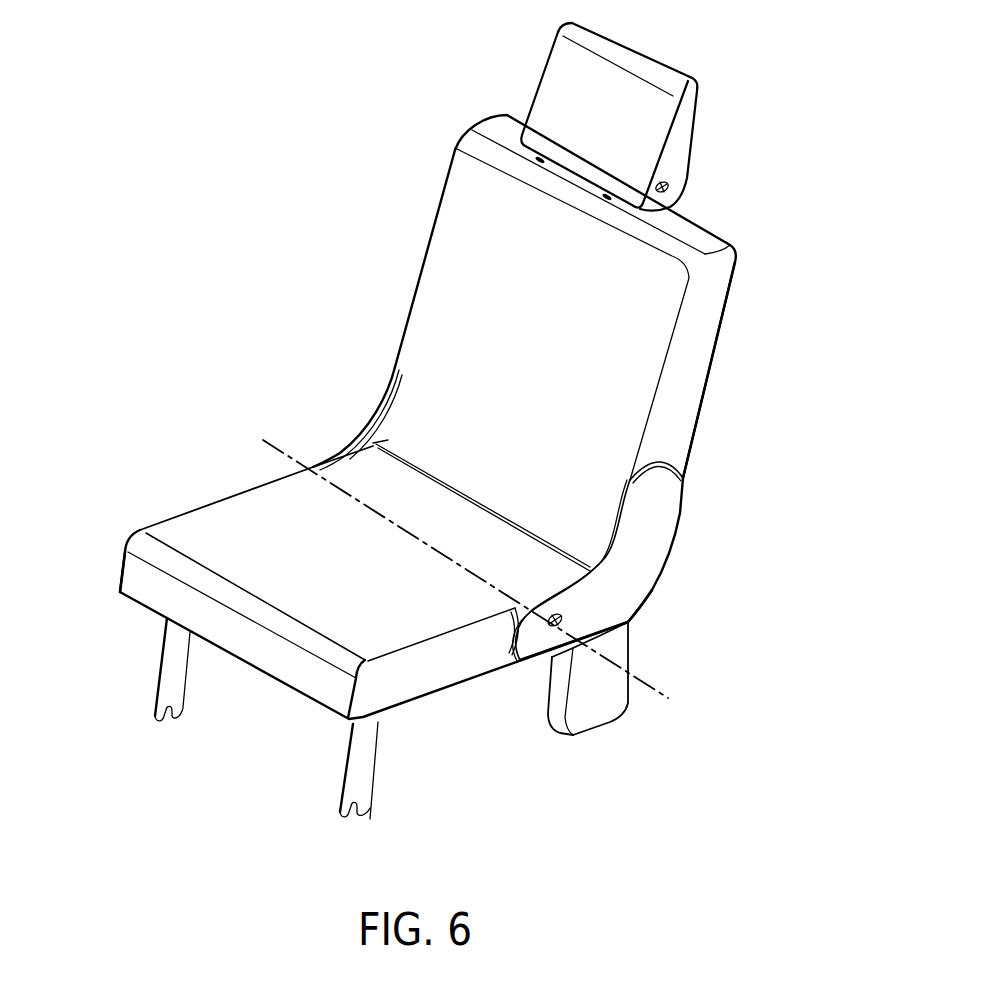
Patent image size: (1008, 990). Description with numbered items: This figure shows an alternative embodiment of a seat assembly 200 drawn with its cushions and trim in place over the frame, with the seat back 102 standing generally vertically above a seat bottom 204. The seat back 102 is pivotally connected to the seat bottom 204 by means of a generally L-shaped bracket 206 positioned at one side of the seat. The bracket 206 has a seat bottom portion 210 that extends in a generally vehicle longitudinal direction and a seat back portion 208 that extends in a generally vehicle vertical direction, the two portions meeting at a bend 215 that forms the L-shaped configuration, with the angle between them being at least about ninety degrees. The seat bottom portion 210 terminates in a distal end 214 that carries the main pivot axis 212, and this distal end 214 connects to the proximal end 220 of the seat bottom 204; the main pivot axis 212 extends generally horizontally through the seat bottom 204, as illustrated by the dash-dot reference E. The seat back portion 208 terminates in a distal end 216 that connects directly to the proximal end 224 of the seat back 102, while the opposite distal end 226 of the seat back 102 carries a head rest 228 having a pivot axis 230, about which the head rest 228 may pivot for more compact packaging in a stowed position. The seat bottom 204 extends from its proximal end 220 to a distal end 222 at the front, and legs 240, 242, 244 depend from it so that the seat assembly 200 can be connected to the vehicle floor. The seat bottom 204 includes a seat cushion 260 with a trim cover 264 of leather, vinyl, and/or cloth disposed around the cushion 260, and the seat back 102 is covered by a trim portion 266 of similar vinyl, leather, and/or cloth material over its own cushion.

The seat assembly 200 is at (225, 271).
The seat bottom 204 is at (160, 493).
The seat back 102 is at (752, 376).
The bracket 206 is at (700, 558).
The seat back portion 208 is at (665, 520).
The seat bottom portion 210 is at (590, 617).
The main pivot axis 212 is at (548, 634).
The distal end 214 is at (523, 635).
The bend 215 is at (638, 593).
The distal end 216 is at (667, 484).
The proximal end 220 is at (428, 657).
The distal end 222 is at (280, 660).
The proximal end 224 is at (687, 421).
The distal end 226 is at (727, 275).
The head rest 228 is at (687, 97).
The pivot axis 230 is at (669, 192).
The leg 240 is at (175, 713).
The leg 242 is at (347, 813).
The leg 244 is at (588, 696).
The seat cushion 260 is at (140, 590).
The trim cover 264 is at (358, 565).
The trim portion 266 is at (593, 403).
The reference E is at (475, 582).